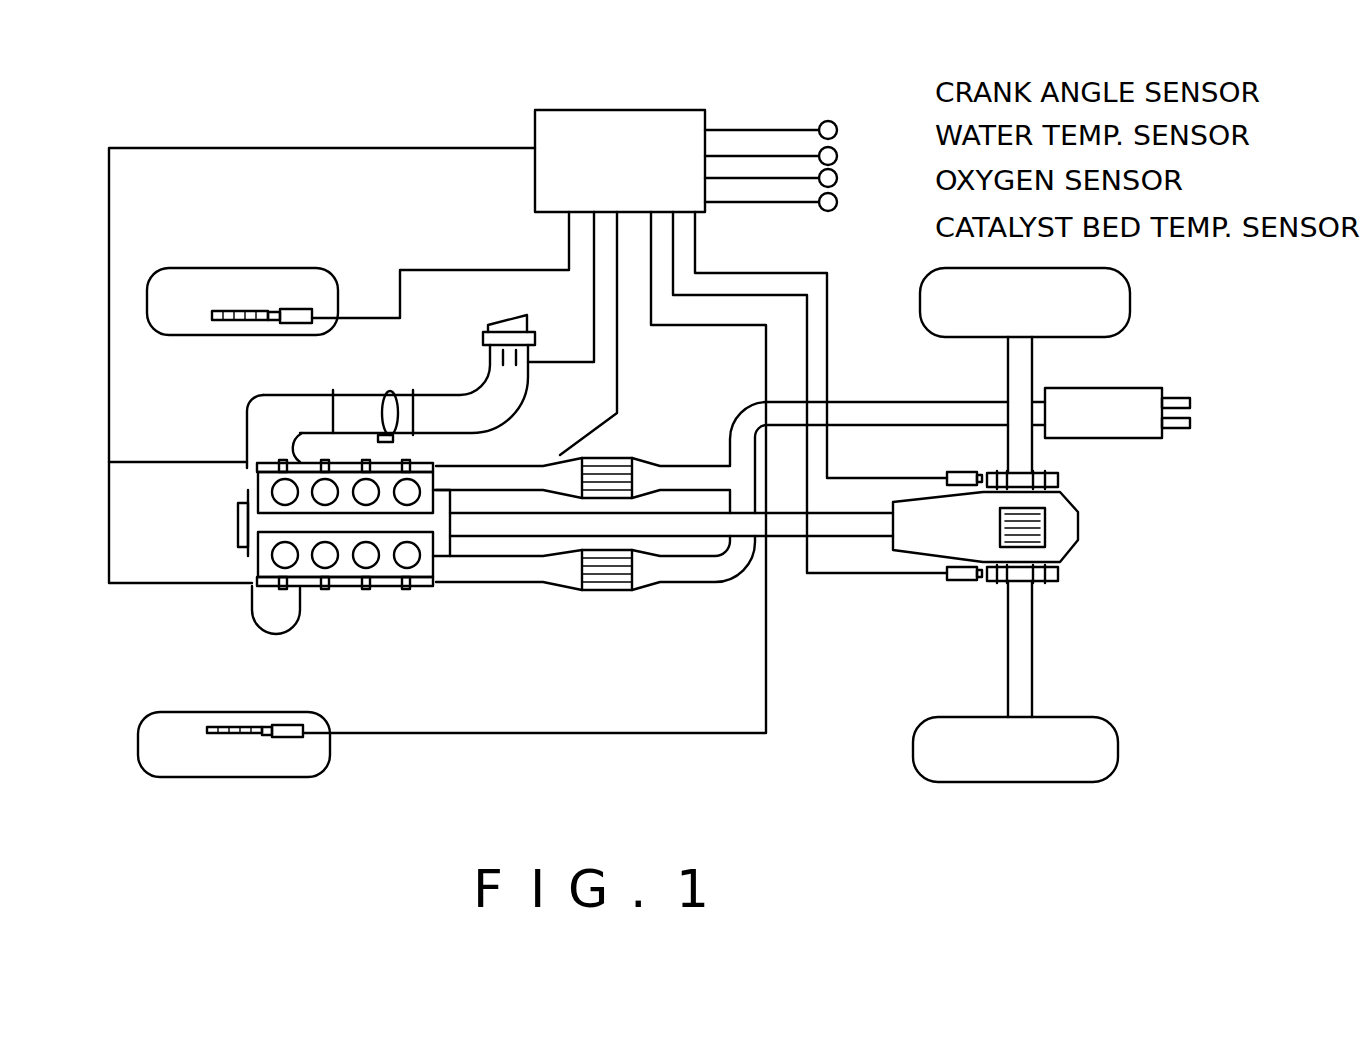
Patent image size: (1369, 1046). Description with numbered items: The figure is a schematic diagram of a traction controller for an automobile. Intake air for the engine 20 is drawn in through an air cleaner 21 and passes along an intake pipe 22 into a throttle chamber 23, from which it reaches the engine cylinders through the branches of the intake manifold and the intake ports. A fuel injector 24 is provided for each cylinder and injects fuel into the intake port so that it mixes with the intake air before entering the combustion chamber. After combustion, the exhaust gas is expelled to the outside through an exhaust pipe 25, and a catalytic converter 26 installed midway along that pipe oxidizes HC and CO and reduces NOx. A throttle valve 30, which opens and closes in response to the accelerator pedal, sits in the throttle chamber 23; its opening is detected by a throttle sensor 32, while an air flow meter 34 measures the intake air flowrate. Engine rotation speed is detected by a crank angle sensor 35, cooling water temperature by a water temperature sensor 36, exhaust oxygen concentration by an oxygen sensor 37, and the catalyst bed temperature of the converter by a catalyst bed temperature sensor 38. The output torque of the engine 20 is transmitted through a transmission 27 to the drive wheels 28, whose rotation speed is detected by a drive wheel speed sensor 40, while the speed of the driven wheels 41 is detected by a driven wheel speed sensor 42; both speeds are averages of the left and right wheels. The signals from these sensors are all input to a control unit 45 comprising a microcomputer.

The automobile engine 20 is at (268, 481).
The air cleaner 21 is at (537, 335).
The intake pipe 22 is at (493, 408).
The throttle chamber 23 is at (392, 392).
The fuel injector 24 is at (413, 608).
The exhaust pipe 25 is at (520, 483).
The catalytic converter 26 is at (610, 480).
The transmission 27 is at (490, 540).
The drive wheels 28 is at (1107, 322).
The throttle valve 30 is at (386, 435).
The throttle sensor 32 is at (416, 392).
The air flow meter 34 is at (528, 362).
The crank angle sensor 35 is at (837, 127).
The water temperature sensor 36 is at (837, 153).
The oxygen sensor 37 is at (837, 181).
The catalyst bed temperature sensor 38 is at (835, 206).
The drive wheel speed sensor 40 is at (957, 474).
The driven wheels 41 is at (168, 287).
The driven wheel speed sensor 42 is at (292, 309).
The control unit 45 is at (631, 120).